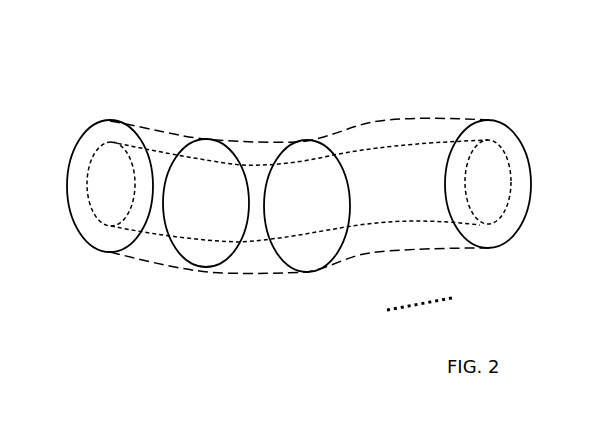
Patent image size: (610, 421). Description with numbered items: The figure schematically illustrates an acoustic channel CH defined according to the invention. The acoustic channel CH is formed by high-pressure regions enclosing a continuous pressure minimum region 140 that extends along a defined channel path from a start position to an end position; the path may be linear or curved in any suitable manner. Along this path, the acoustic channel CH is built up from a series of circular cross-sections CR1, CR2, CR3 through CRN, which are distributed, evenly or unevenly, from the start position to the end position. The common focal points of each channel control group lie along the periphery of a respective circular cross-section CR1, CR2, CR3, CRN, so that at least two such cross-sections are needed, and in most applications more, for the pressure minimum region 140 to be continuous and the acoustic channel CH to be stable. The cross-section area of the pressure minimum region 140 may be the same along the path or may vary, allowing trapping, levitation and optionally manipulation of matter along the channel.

The continuous pressure minimum region 140 is at (390, 135).
The acoustic channel CH is at (493, 120).
The circular cross-section CR1 is at (107, 250).
The circular cross-section CR2 is at (205, 270).
The circular cross-section CR3 is at (312, 270).
The circular cross-section CRN is at (488, 248).